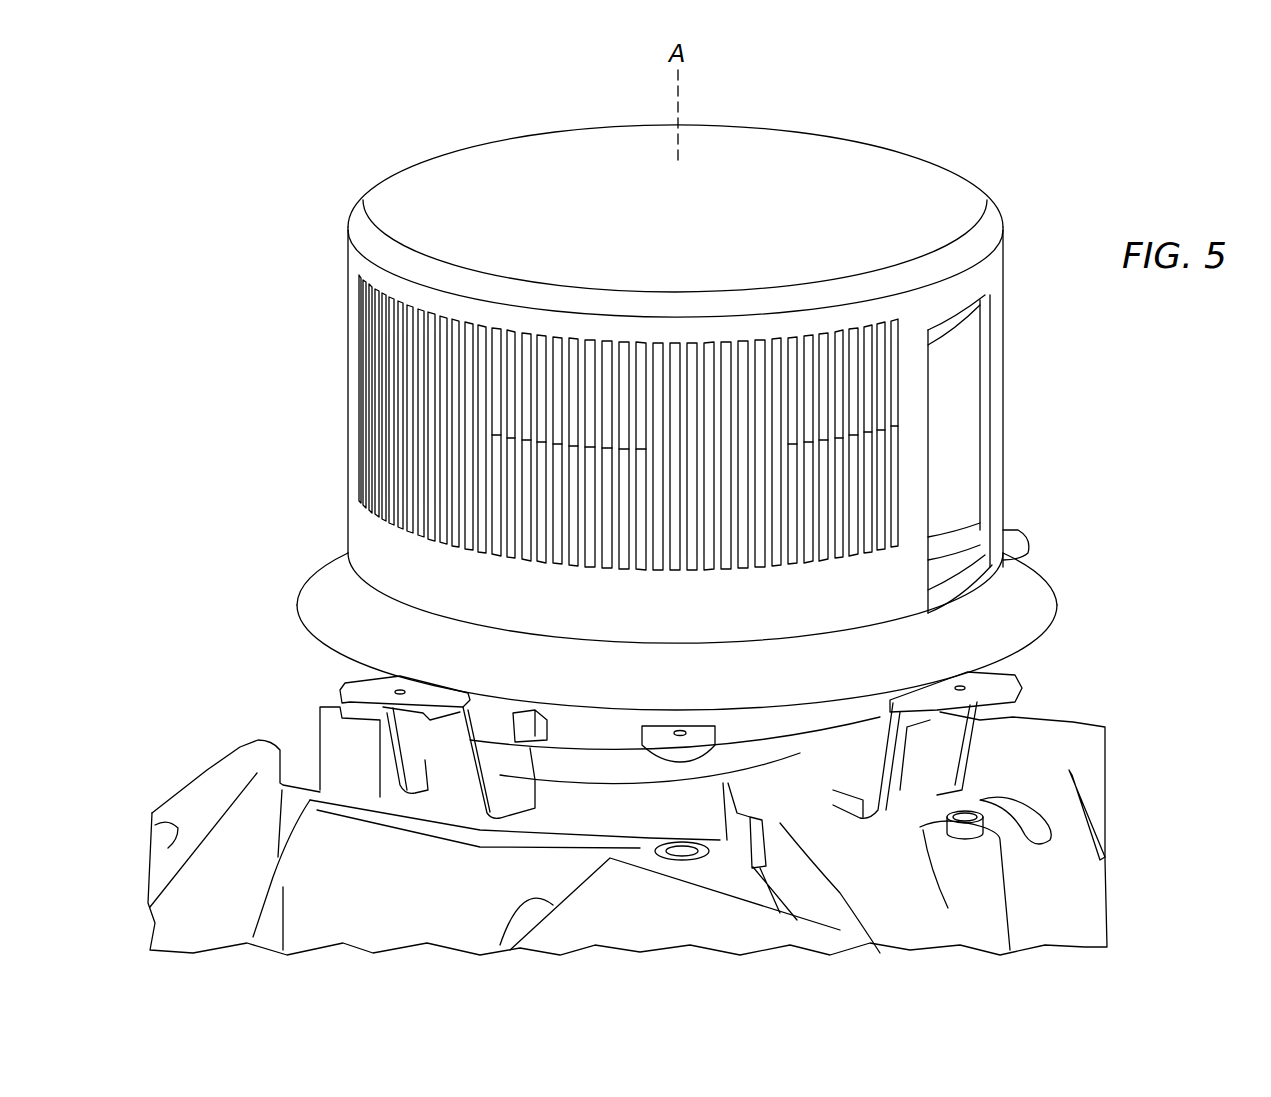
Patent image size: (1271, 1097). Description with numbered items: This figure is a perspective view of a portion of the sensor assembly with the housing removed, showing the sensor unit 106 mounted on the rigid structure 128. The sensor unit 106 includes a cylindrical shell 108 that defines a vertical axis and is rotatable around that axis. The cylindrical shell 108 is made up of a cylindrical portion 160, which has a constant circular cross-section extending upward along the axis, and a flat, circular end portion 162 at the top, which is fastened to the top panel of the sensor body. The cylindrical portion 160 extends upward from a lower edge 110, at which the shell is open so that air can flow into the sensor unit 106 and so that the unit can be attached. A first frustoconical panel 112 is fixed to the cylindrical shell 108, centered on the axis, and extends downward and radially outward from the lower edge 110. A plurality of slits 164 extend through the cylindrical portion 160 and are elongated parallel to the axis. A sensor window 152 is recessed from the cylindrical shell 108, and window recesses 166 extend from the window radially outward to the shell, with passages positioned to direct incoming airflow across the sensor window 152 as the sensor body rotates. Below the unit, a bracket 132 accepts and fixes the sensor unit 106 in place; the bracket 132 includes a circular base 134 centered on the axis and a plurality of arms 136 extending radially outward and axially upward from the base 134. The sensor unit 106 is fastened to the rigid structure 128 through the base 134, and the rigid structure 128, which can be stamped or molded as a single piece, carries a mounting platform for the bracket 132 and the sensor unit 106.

The sensor unit 106 is at (932, 160).
The cylindrical shell 108 is at (445, 168).
The end portion 162 is at (787, 150).
The cylindrical portion 160 is at (360, 532).
The slits 164 is at (405, 415).
The sensor window 152 is at (962, 475).
The window recesses 166 is at (947, 567).
The lower edge 110 is at (352, 592).
The first frustoconical panel 112 is at (348, 630).
The bracket 132 is at (990, 690).
The arms 136 is at (360, 677).
The base 134 is at (780, 760).
The rigid structure 128 is at (1070, 898).